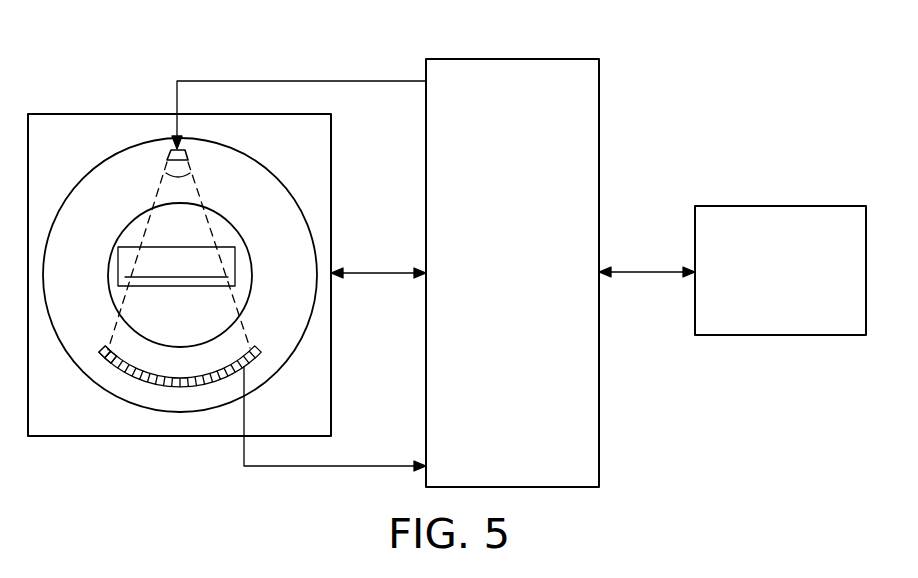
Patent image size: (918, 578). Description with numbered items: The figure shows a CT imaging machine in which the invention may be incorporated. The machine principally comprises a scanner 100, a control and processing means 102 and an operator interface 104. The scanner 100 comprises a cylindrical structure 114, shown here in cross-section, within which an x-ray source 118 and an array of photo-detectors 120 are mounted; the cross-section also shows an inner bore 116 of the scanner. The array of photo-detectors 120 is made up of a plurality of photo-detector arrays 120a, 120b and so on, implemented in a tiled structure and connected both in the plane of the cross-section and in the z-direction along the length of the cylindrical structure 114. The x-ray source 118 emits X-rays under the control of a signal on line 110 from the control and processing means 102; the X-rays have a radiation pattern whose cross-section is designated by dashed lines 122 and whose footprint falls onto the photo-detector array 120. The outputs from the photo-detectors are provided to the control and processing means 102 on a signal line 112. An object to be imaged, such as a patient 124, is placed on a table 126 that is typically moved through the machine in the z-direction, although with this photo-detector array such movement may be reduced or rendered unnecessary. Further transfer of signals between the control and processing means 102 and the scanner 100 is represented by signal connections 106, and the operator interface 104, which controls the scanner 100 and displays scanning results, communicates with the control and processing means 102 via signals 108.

The scanner 100 is at (52, 113).
The control and processing means 102 is at (566, 58).
The operator interface 104 is at (836, 205).
The signal connections 106 is at (377, 272).
The signals 108 is at (645, 271).
The line 110 is at (340, 80).
The signal line 112 is at (343, 468).
The cylindrical structure 114 is at (268, 163).
The inner bore 116 is at (228, 220).
The x-ray source 118 is at (170, 153).
The array of photo-detectors 120 is at (256, 347).
The photo-detector array 120a is at (104, 352).
The photo-detector array 120b is at (112, 362).
The dashed lines 122 is at (165, 176).
The patient 124 is at (176, 255).
The table 126 is at (178, 280).